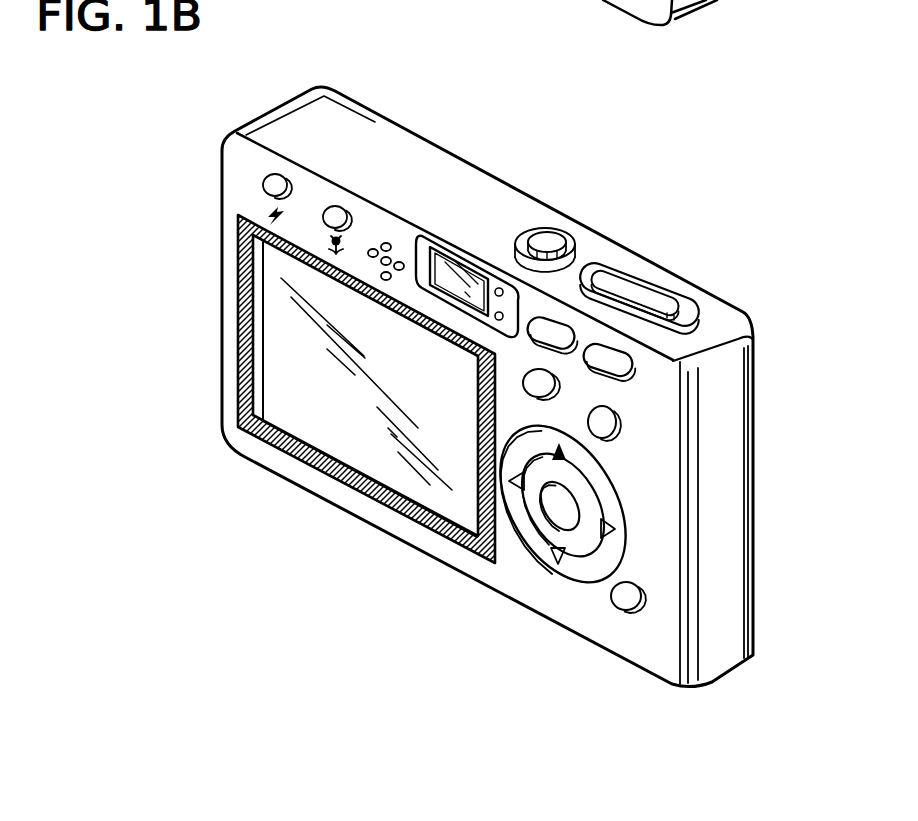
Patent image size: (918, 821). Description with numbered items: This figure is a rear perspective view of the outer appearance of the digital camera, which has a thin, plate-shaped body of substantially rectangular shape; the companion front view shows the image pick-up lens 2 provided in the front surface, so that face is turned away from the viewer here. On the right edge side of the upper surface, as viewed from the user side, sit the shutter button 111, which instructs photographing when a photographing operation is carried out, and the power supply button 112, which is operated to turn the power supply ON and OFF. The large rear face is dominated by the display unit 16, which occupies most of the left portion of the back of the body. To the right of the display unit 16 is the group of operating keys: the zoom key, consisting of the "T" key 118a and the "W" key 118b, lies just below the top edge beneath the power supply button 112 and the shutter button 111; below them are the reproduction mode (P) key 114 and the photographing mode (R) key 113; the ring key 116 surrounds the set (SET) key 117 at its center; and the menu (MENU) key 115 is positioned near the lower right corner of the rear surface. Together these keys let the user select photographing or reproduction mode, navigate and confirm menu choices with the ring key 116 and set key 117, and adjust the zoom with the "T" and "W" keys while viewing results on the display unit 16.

The image pick-up lens 2 is at (755, 390).
The display unit 16 is at (337, 418).
The shutter button 111 is at (637, 287).
The power supply button 112 is at (548, 237).
The photographing mode (R) key 113 is at (610, 437).
The reproduction mode (P) key 114 is at (538, 390).
The menu (MENU) key 115 is at (615, 599).
The ring key 116 is at (530, 533).
The set (SET) key 117 is at (558, 518).
The "T" key 118a is at (541, 325).
The "W" key 118b is at (627, 380).